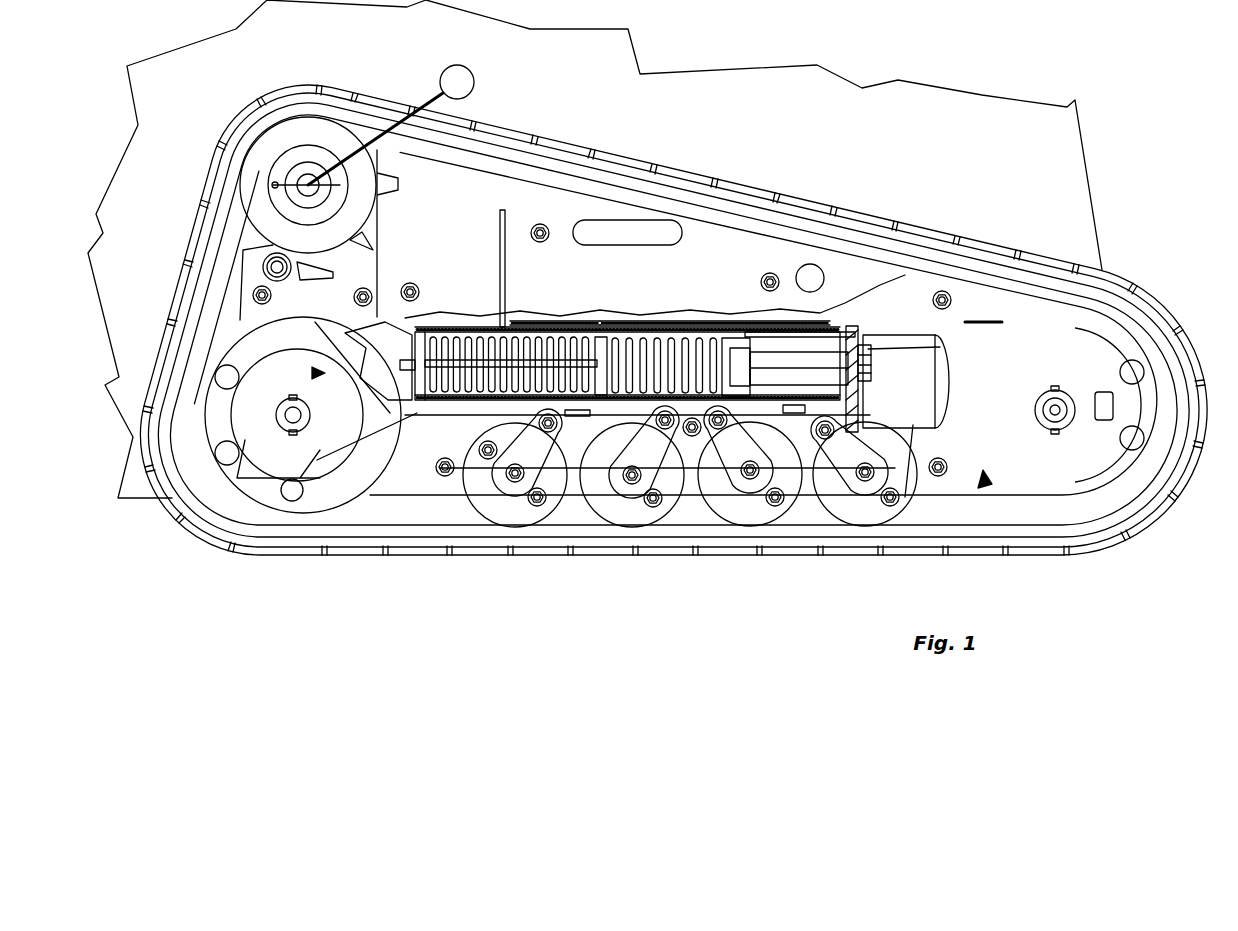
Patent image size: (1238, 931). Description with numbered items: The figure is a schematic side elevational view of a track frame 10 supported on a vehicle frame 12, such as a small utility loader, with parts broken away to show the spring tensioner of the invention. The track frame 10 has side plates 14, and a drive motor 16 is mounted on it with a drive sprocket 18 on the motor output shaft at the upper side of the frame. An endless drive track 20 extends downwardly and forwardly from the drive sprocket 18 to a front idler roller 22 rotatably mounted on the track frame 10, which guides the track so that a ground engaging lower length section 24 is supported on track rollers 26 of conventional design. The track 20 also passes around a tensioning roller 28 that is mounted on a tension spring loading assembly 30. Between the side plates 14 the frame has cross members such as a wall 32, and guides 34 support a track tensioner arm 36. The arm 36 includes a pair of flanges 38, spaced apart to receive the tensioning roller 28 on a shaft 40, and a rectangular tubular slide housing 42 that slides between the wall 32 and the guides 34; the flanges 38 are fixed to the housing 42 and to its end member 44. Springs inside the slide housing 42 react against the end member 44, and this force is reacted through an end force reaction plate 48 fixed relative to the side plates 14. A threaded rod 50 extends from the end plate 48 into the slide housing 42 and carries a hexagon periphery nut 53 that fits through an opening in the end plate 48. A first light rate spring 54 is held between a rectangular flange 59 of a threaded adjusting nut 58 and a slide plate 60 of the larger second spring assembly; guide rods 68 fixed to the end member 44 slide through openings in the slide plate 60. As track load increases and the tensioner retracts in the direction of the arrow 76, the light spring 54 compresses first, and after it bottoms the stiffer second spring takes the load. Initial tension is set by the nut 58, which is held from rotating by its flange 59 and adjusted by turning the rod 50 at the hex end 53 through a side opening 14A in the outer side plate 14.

The track frame 10 is at (985, 484).
The vehicle frame 12 is at (1065, 200).
The side plates 14 is at (1062, 478).
The side opening 14A is at (913, 427).
The drive motor 16 is at (474, 80).
The drive sprocket 18 is at (362, 188).
The endless drive track 20 is at (903, 222).
The front idler roller 22 is at (1105, 440).
The ground engaging lower length section 24 is at (598, 530).
The track rollers 26 is at (735, 512).
The tensioning roller 28 is at (340, 487).
The tension spring loading assembly 30 is at (373, 322).
The wall 32 is at (585, 333).
The guides 34 is at (568, 428).
The track tensioner arm 36 is at (469, 322).
The flanges 38 is at (427, 414).
The shaft 40 is at (284, 405).
The slide housing 42 is at (748, 326).
The end member 44 is at (376, 405).
The end force reaction plate 48 is at (860, 393).
The threaded rod 50 is at (822, 350).
The hexagon periphery nut 53 is at (872, 366).
The first spring 54 is at (720, 345).
The threaded adjusting nut 58 is at (762, 331).
The rectangular flange 59 is at (765, 333).
The slide plate 60 is at (603, 336).
The guide rods 68 is at (573, 416).
The arrow 76 is at (313, 373).